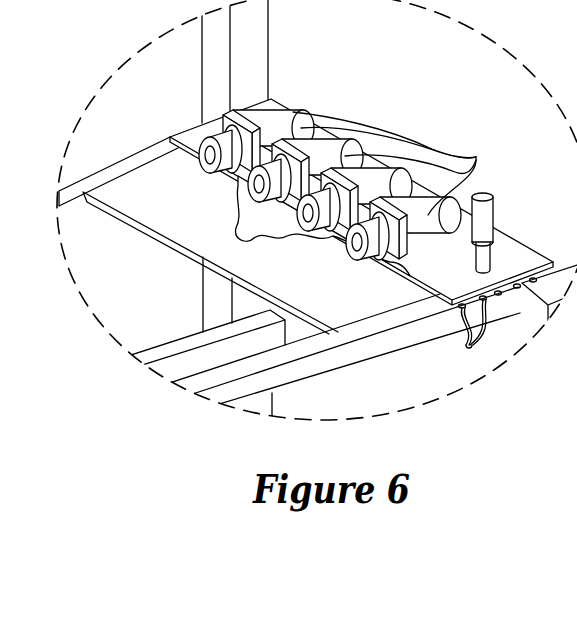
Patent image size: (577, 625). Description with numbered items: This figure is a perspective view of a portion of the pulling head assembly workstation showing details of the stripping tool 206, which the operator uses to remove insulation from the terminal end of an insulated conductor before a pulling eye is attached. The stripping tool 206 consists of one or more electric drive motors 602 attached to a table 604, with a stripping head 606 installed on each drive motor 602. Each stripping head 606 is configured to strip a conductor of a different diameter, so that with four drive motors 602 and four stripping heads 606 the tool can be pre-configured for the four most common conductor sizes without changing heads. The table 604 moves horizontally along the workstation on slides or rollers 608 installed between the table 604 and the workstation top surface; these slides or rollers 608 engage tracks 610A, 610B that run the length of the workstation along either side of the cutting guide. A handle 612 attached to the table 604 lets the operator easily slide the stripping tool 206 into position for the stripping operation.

The stripping tool 206 is at (400, 99).
The electric drive motor 602 is at (475, 158).
The table 604 is at (513, 263).
The stripping head 606 is at (247, 232).
The slides or rollers 608 is at (518, 288).
The track 610A is at (362, 332).
The track 610B is at (127, 171).
The handle 612 is at (497, 199).